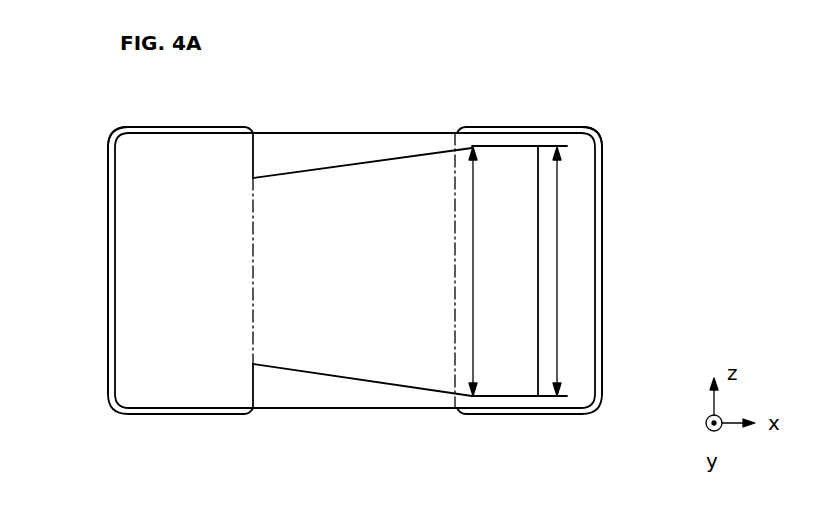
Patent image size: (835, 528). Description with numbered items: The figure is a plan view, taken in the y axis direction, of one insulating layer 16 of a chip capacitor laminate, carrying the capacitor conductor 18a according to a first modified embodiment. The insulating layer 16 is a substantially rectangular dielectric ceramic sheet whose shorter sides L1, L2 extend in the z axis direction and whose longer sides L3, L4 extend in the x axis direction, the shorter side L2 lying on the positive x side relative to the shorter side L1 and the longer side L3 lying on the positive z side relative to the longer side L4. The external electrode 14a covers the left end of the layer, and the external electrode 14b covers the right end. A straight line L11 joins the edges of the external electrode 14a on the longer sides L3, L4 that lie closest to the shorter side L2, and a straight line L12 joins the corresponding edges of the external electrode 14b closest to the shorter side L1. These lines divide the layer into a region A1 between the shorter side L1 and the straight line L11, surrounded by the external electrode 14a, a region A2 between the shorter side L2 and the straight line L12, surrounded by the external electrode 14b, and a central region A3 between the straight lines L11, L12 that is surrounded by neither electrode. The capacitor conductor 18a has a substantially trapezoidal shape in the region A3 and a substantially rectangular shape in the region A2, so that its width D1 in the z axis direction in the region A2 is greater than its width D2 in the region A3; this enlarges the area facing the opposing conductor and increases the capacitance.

The external electrode 14a is at (108, 285).
The external electrode 14b is at (602, 290).
The insulating layer 16 is at (580, 368).
The capacitor conductor 18a is at (390, 152).
The region A1 is at (152, 160).
The region A2 is at (572, 152).
The region A3 is at (347, 150).
The shorter side L1 is at (108, 358).
The shorter side L2 is at (596, 328).
The longer side L3 is at (317, 133).
The longer side L4 is at (330, 408).
The straight line L11 is at (253, 290).
The straight line L12 is at (455, 293).
The width D1 is at (572, 271).
The width D2 is at (490, 271).